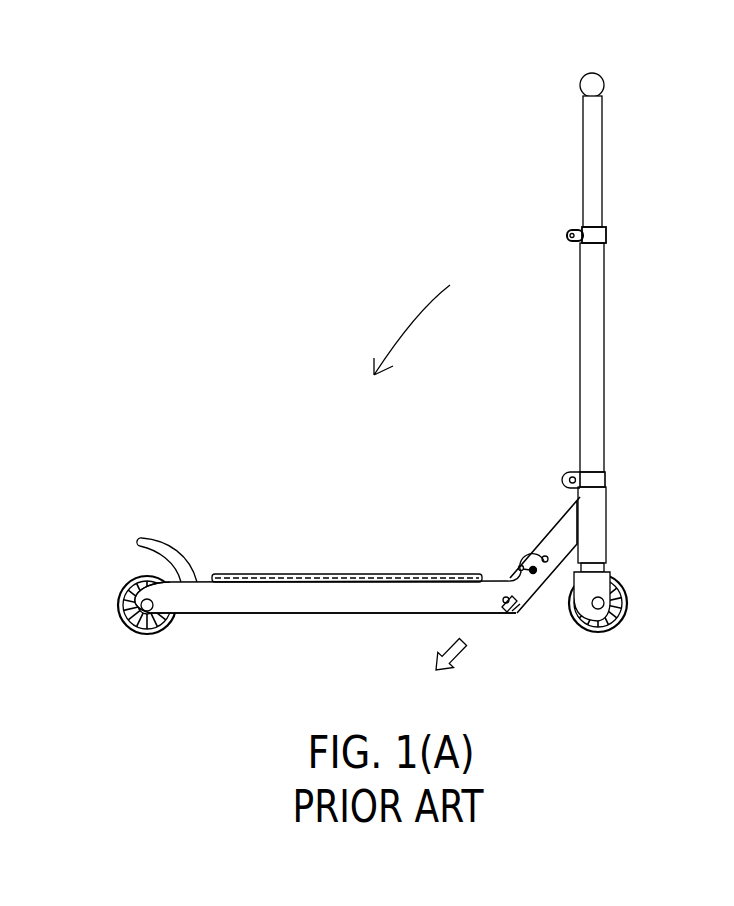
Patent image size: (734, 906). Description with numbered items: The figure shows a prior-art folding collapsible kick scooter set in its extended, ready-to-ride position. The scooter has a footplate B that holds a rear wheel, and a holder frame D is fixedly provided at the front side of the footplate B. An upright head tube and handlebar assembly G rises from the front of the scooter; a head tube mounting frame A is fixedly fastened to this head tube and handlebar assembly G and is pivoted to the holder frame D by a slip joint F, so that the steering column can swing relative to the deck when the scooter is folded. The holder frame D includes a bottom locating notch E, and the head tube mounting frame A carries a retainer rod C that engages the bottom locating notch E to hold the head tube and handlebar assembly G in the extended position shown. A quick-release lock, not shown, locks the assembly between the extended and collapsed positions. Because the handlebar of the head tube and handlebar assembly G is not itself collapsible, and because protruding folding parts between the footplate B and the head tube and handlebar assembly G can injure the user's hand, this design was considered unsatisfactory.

The head tube and handlebar assembly G is at (596, 185).
The head tube mounting frame A is at (562, 527).
The footplate B is at (371, 600).
The retainer rod C is at (514, 612).
The holder frame D is at (518, 571).
The bottom locating notch E is at (504, 608).
The slip joint F is at (529, 567).